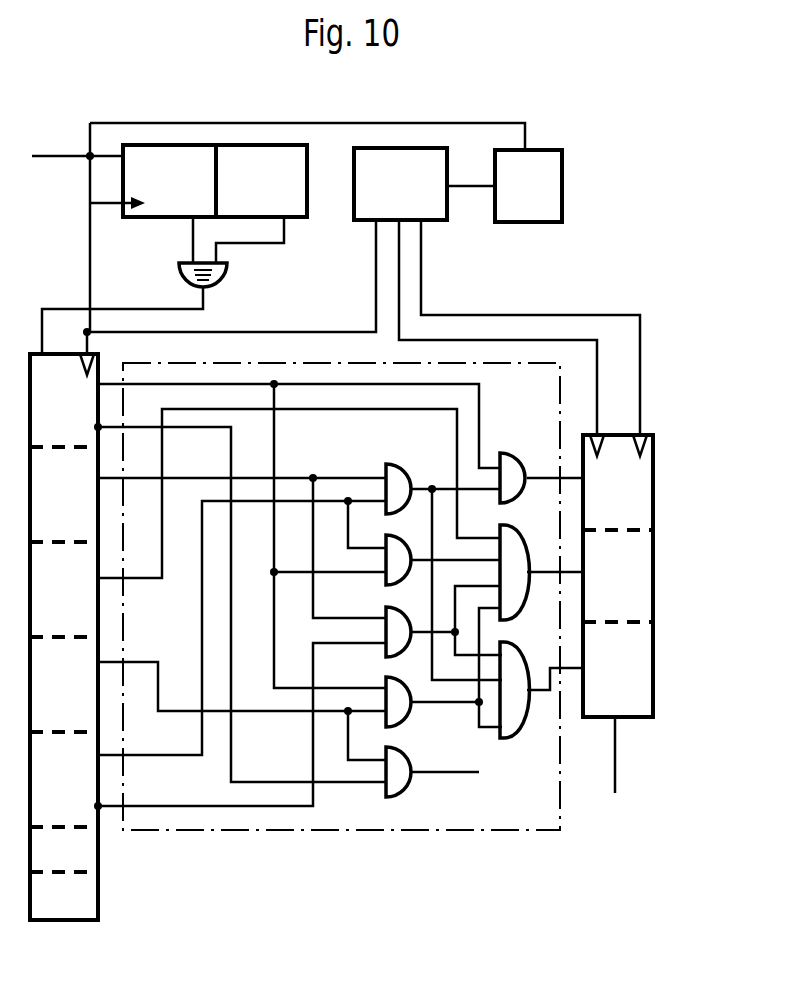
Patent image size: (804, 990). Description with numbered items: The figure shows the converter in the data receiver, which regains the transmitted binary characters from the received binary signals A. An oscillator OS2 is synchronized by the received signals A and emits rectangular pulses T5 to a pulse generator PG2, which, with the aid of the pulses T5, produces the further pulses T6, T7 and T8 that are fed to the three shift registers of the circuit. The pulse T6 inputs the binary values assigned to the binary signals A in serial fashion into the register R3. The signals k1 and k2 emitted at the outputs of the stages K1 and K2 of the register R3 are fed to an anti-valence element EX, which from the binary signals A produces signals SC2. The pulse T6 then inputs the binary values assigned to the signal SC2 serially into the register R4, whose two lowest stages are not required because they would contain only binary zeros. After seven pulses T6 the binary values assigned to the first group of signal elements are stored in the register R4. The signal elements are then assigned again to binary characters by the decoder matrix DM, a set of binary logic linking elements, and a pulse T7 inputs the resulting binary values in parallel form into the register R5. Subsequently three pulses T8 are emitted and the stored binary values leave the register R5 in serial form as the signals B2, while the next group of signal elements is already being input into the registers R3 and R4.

The register R3 is at (230, 153).
The stage of register R3 K1 is at (185, 181).
The stage of register R3 K2 is at (254, 189).
The binary signals A is at (72, 145).
The signal k1 is at (185, 224).
The signal k2 is at (272, 255).
The anti-valence element EX is at (147, 304).
The signals SC2 is at (160, 298).
The pulse generator PG2 is at (445, 240).
The oscillator OS2 is at (576, 186).
The pulses T5 is at (473, 178).
The pulse T6 is at (325, 325).
The pulse T7 is at (575, 395).
The pulses T8 is at (650, 365).
The register R4 is at (90, 905).
The register R5 is at (653, 502).
The signals B2 is at (627, 743).
The decoder matrix DM is at (360, 831).